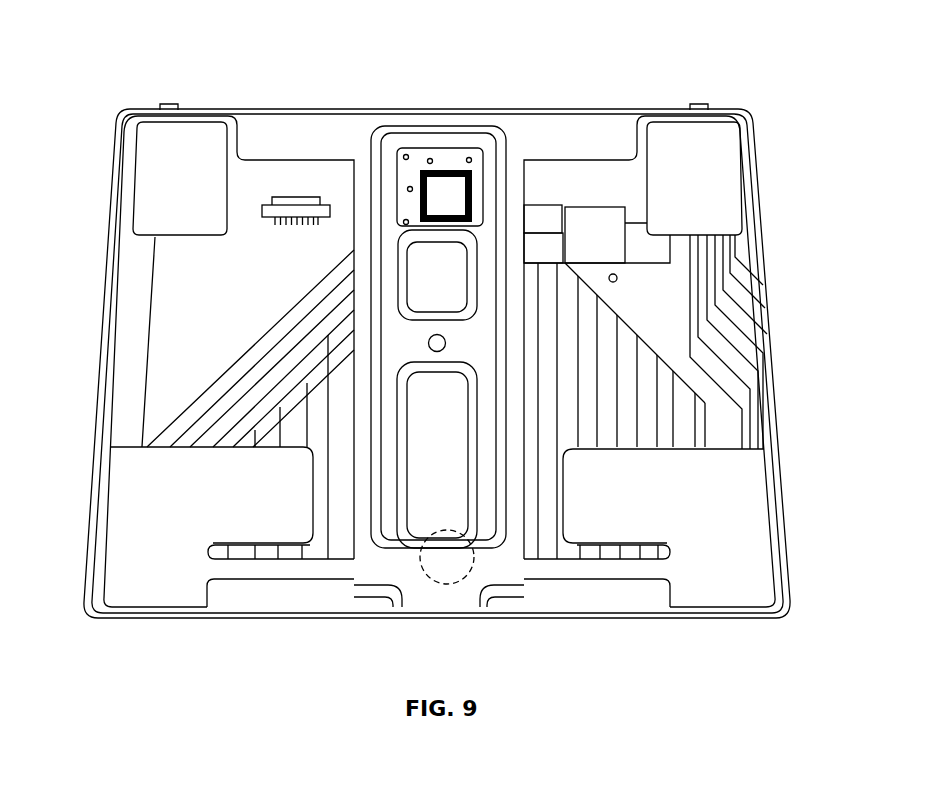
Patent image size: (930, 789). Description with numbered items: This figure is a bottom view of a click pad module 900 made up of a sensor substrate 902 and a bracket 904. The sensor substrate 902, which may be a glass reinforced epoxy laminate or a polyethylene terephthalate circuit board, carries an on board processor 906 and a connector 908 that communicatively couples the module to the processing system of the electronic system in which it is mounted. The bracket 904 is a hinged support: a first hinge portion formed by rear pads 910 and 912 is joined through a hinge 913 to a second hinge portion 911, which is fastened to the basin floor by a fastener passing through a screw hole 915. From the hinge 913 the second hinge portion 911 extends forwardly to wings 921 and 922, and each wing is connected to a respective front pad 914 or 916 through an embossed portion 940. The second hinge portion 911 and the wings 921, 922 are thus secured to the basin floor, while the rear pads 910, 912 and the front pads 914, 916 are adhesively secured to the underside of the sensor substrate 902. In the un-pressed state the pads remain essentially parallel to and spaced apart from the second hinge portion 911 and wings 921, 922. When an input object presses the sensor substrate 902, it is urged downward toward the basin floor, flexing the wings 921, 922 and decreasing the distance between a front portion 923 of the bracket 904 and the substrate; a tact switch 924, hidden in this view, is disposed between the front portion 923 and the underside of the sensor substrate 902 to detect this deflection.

The click pad module 900 is at (120, 36).
The sensor substrate 902 is at (112, 237).
The bracket 904 is at (296, 110).
The on board processor 906 is at (460, 162).
The connector 908 is at (297, 196).
The rear pad 910 is at (178, 178).
The second hinge portion 911 is at (488, 355).
The rear pad 912 is at (695, 176).
The hinge 913 is at (650, 110).
The front pad 914 is at (150, 493).
The screw hole 915 is at (428, 343).
The front pad 916 is at (733, 493).
The wing 921 is at (270, 568).
The wing 922 is at (597, 568).
The front portion 923 is at (493, 580).
The tact switch 924 is at (447, 584).
The embossed portion 940 is at (222, 570).